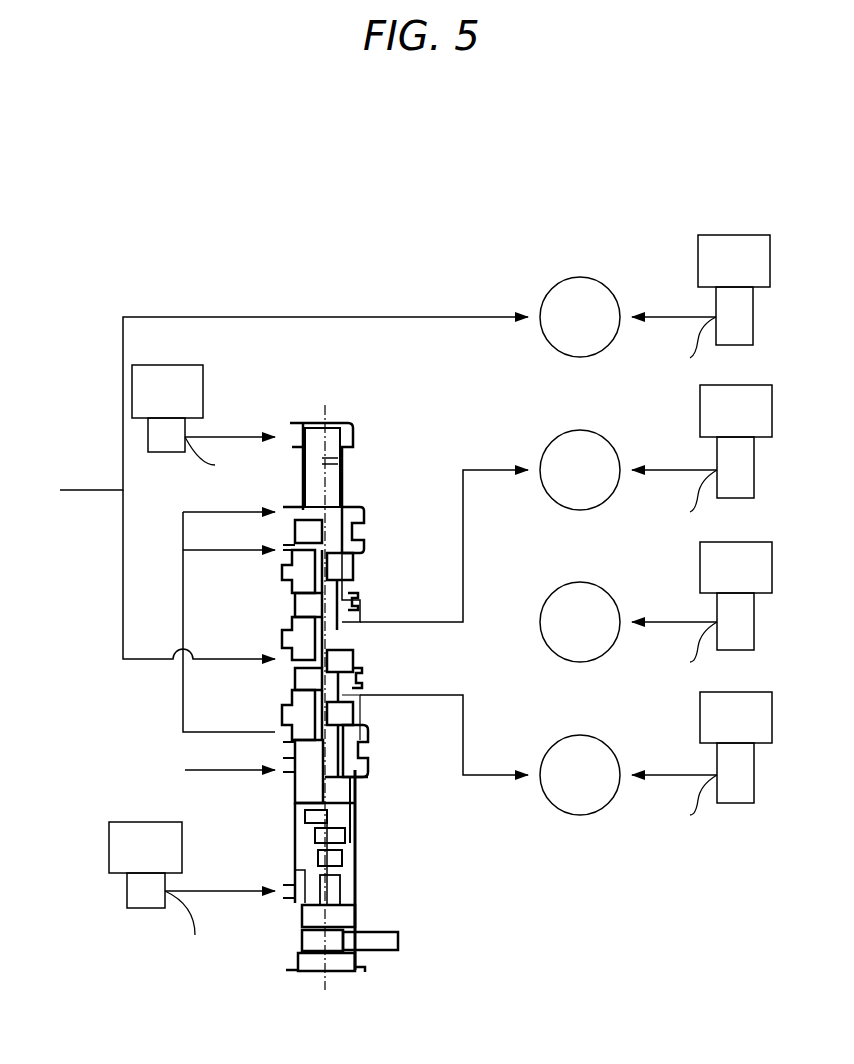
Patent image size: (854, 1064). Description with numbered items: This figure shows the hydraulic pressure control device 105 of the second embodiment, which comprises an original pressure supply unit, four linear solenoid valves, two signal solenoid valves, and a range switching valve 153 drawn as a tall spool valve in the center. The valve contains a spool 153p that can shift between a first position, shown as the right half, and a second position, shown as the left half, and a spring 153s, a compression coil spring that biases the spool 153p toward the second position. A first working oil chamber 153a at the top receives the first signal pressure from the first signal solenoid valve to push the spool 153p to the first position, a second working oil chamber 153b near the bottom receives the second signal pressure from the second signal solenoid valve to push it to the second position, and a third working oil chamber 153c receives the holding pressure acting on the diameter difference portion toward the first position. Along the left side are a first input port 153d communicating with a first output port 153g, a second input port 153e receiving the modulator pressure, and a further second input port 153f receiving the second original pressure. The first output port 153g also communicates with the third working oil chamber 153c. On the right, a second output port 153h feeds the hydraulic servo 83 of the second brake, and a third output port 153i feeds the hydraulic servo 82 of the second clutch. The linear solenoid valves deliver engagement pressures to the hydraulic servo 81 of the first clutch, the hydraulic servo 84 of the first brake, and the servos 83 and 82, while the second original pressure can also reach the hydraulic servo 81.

The hydraulic pressure control device 105 is at (368, 192).
The range switching valve 153 is at (392, 972).
The first working oil chamber 153a is at (330, 430).
The second working oil chamber 153b is at (292, 880).
The third working oil chamber 153c is at (292, 528).
The first input port 153d is at (292, 560).
The second input port 153e is at (288, 778).
The second input port 153f is at (290, 652).
The first output port 153g is at (292, 722).
The second output port 153h is at (362, 612).
The third output port 153i is at (365, 712).
The spool 153p is at (362, 815).
The spring 153s is at (362, 875).
The hydraulic servo 81 is at (608, 345).
The hydraulic servo 82 is at (608, 803).
The hydraulic servo 83 is at (608, 498).
The hydraulic servo 84 is at (608, 650).